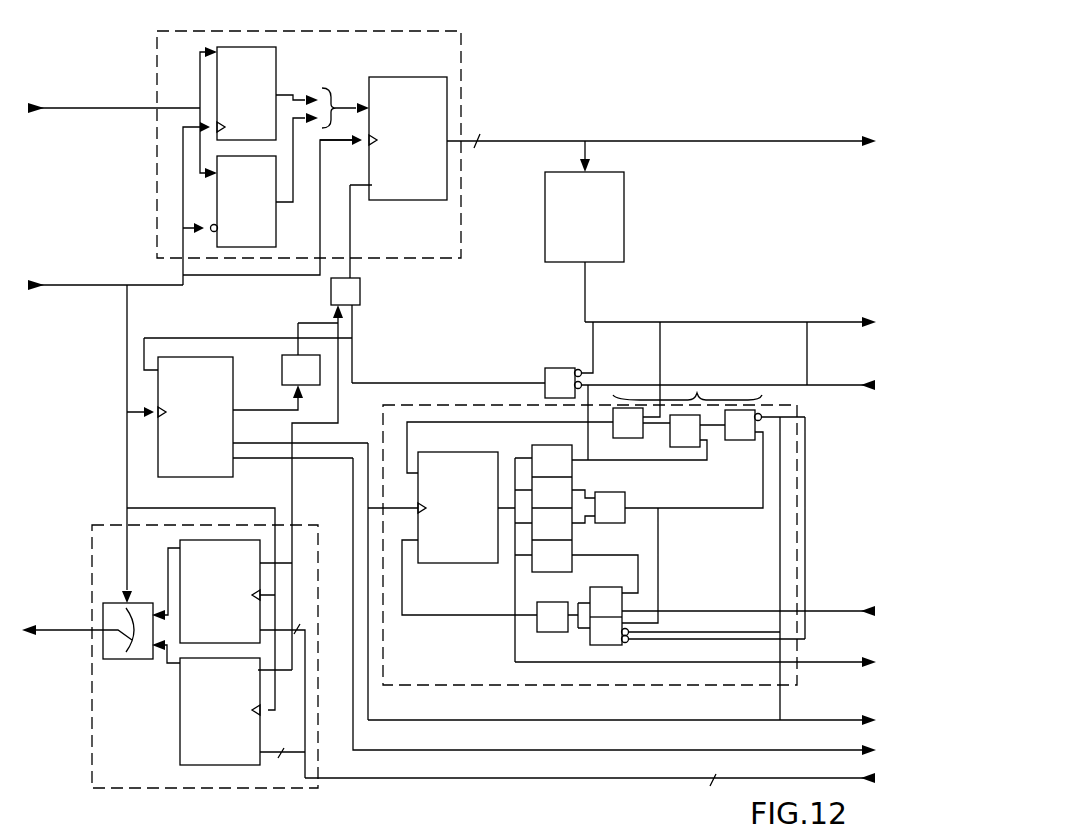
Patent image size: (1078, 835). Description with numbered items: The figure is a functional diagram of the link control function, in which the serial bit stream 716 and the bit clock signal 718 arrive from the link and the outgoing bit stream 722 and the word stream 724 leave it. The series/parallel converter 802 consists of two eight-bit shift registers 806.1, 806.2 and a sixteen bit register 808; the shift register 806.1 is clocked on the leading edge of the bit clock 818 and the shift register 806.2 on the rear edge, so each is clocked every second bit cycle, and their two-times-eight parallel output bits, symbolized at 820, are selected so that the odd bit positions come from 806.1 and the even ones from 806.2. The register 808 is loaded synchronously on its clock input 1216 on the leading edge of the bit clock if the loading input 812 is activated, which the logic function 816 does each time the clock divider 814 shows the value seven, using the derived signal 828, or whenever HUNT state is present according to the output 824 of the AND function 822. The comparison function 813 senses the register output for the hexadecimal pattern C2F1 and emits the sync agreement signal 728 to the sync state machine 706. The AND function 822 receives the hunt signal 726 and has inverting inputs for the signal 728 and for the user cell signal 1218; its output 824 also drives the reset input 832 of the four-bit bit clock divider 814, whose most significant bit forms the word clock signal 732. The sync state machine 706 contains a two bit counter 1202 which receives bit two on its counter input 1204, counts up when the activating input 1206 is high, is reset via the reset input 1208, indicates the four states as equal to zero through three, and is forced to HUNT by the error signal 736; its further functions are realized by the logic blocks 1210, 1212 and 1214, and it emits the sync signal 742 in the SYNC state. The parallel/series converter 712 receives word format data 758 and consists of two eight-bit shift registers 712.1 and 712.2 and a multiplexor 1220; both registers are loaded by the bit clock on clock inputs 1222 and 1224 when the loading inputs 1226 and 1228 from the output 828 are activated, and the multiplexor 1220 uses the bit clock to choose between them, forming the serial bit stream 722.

The bit stream 716 is at (68, 108).
The bit clock signal 718 is at (60, 262).
The outgoing bit stream 722 is at (44, 626).
The word stream 724 is at (757, 141).
The sync agreement signal 728 is at (660, 340).
The user cell signal 1218 is at (814, 385).
The word clock signal 732 is at (785, 480).
The sync state machine 706 is at (790, 520).
The error signal 736 is at (813, 611).
The word format data 758 is at (612, 778).
The series/parallel converter 802 is at (462, 37).
The 8 bit shift register 806.1 is at (270, 48).
The 8 bit shift register 806.2 is at (217, 183).
The AND function 820 is at (344, 102).
The 16 bit register 808 is at (396, 77).
The loading input 812 is at (350, 240).
The logic function 816 is at (362, 292).
The bit clock signal 818 is at (595, 150).
The comparison function 813 is at (624, 181).
The clock input 1216 is at (368, 152).
The reset input 832 is at (157, 370).
The output signal 828 is at (294, 403).
The bit clock divider 814 is at (158, 461).
The output 824 is at (410, 383).
The AND function 822 is at (545, 370).
The logic block 1210 is at (684, 393).
The hunt signal 726 is at (590, 436).
The activating input 1206 is at (418, 468).
The two bit counter 1202 is at (495, 542).
The counter input 1204 is at (412, 498).
The reset input 1208 is at (418, 548).
The logic block 1214 is at (628, 532).
The logic block 1212 is at (638, 607).
The sync signal 742 is at (650, 662).
The loading input 1226 is at (262, 562).
The clock input 1222 is at (262, 597).
The loading input 1228 is at (262, 671).
The clock input 1224 is at (262, 711).
The parallel/series converter 712 is at (128, 774).
The 8-bit shift register 712.1 is at (180, 544).
The 8-bit shift register 712.2 is at (180, 730).
The multiplexor 1220 is at (140, 656).